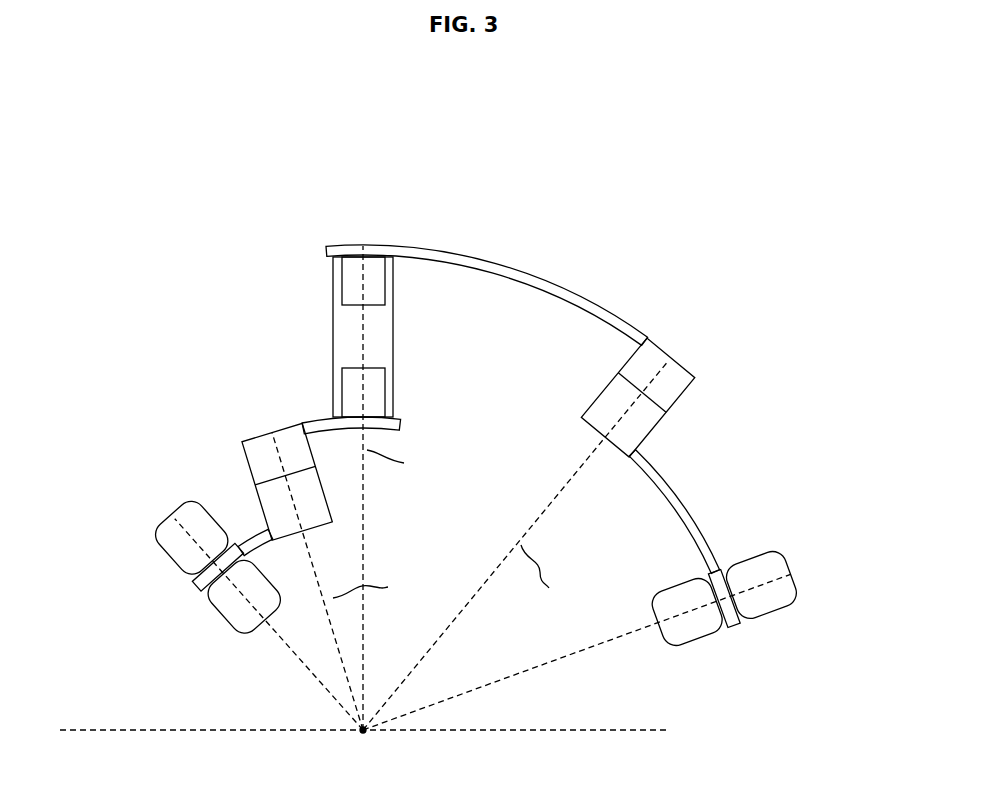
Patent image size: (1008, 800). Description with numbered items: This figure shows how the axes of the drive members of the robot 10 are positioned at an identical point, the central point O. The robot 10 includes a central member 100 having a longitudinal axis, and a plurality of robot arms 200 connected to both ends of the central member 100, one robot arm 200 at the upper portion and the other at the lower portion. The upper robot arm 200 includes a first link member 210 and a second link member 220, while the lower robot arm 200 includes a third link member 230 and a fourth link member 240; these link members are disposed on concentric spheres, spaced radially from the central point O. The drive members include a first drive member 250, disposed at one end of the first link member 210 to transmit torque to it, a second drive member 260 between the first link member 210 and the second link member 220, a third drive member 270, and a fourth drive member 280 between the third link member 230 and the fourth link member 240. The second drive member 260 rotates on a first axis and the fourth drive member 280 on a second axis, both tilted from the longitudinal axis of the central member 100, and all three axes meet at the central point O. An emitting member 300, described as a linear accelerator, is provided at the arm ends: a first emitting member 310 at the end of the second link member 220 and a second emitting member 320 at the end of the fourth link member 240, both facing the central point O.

The robot 10 is at (484, 109).
The central member 100 is at (342, 337).
The robot arms 200 is at (456, 533).
The first link member 210 is at (500, 268).
The second link member 220 is at (688, 509).
The third link member 230 is at (318, 421).
The fourth link member 240 is at (255, 532).
The first drive member 250 is at (388, 280).
The second drive member 260 is at (592, 398).
The third drive member 270 is at (388, 383).
The fourth drive member 280 is at (333, 503).
The emitting member 300 is at (468, 609).
The first emitting member 310 is at (773, 614).
The second emitting member 320 is at (172, 562).